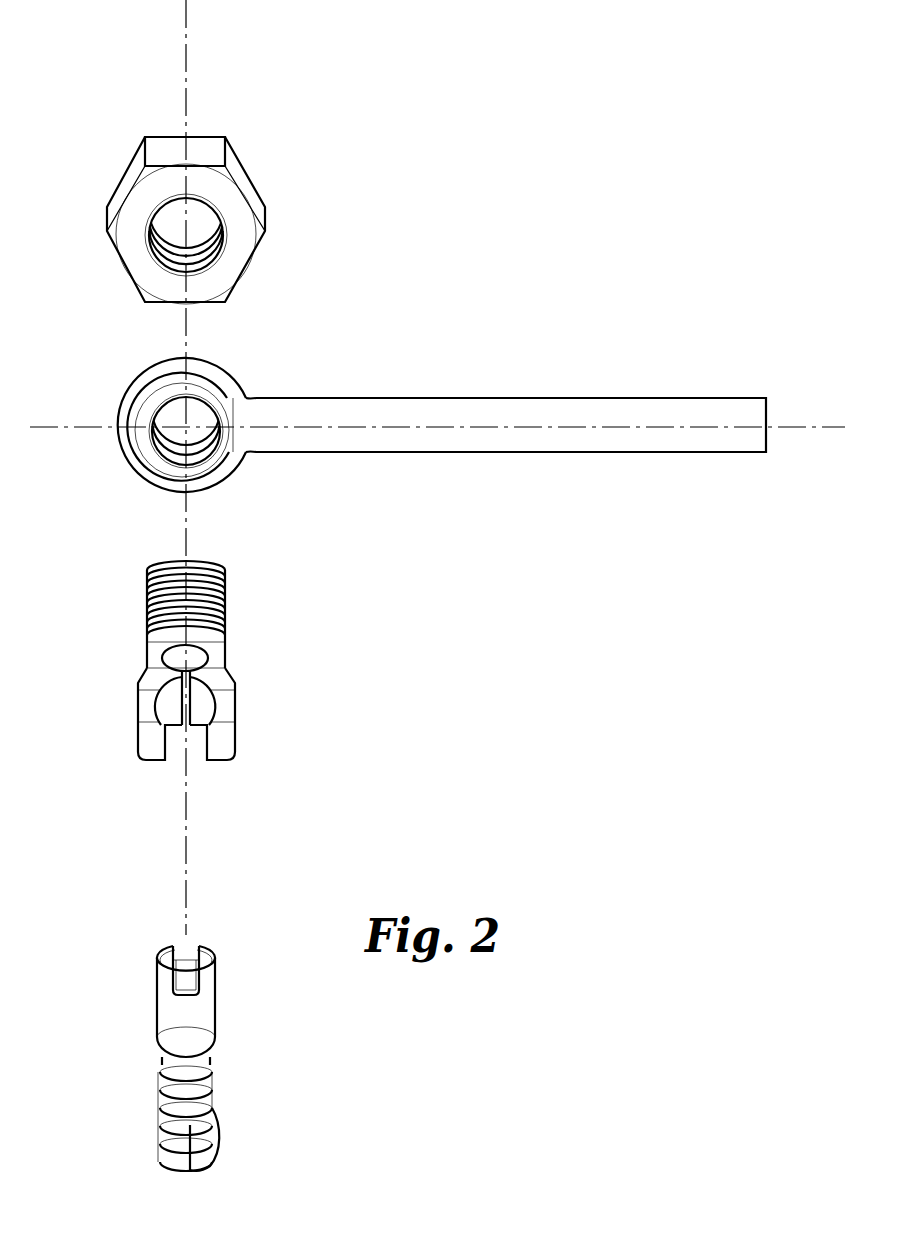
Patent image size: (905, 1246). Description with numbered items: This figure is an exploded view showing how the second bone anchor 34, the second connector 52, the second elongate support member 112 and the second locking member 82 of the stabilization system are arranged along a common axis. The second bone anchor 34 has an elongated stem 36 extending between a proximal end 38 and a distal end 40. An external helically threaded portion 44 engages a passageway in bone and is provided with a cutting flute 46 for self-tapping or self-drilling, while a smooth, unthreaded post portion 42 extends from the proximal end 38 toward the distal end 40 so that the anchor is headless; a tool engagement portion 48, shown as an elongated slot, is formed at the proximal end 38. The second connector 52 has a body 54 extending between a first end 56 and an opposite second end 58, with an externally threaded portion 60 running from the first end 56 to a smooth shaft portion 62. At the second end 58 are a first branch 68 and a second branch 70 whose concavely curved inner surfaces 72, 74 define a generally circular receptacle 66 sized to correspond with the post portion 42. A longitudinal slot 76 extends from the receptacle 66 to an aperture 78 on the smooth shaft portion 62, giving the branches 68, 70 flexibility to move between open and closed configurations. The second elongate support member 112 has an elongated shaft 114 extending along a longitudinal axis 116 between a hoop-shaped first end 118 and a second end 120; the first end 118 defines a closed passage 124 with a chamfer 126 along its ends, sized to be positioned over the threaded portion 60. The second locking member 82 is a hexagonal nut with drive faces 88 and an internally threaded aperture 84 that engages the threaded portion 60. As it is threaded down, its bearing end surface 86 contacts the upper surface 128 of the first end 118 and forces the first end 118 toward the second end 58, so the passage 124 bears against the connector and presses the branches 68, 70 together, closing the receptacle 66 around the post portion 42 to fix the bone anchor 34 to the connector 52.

The second bone anchor 34 is at (158, 1033).
The elongated stem 36 is at (174, 1113).
The proximal end 38 is at (209, 969).
The distal end 40 is at (187, 1170).
The post portion 42 is at (218, 995).
The threaded portion 44 is at (210, 1087).
The cutting flute 46 is at (202, 1147).
The tool engagement portion 48 is at (180, 968).
The second connector 52 is at (191, 688).
The body 54 is at (211, 590).
The first end 56 is at (197, 552).
The second end 58 is at (222, 747).
The externally threaded portion 60 is at (148, 590).
The smooth shaft portion 62 is at (197, 630).
The receptacle 66 is at (192, 746).
The first branch 68 is at (135, 728).
The second branch 70 is at (233, 722).
The concavely curved inner surface 72 is at (168, 707).
The concavely curved inner surface 74 is at (207, 687).
The longitudinal slot 76 is at (187, 710).
The aperture 78 is at (187, 657).
The second locking member 82 is at (163, 198).
The internally threaded aperture 84 is at (175, 222).
The bearing end surface 86 is at (235, 205).
The drive faces 88 is at (165, 158).
The second elongate support member 112 is at (432, 410).
The elongated shaft 114 is at (428, 400).
The longitudinal axis 116 is at (797, 428).
The first end 118 is at (178, 438).
The second end 120 is at (766, 398).
The passage 124 is at (213, 440).
The chamfer 126 is at (162, 447).
The upper surface 128 is at (205, 358).